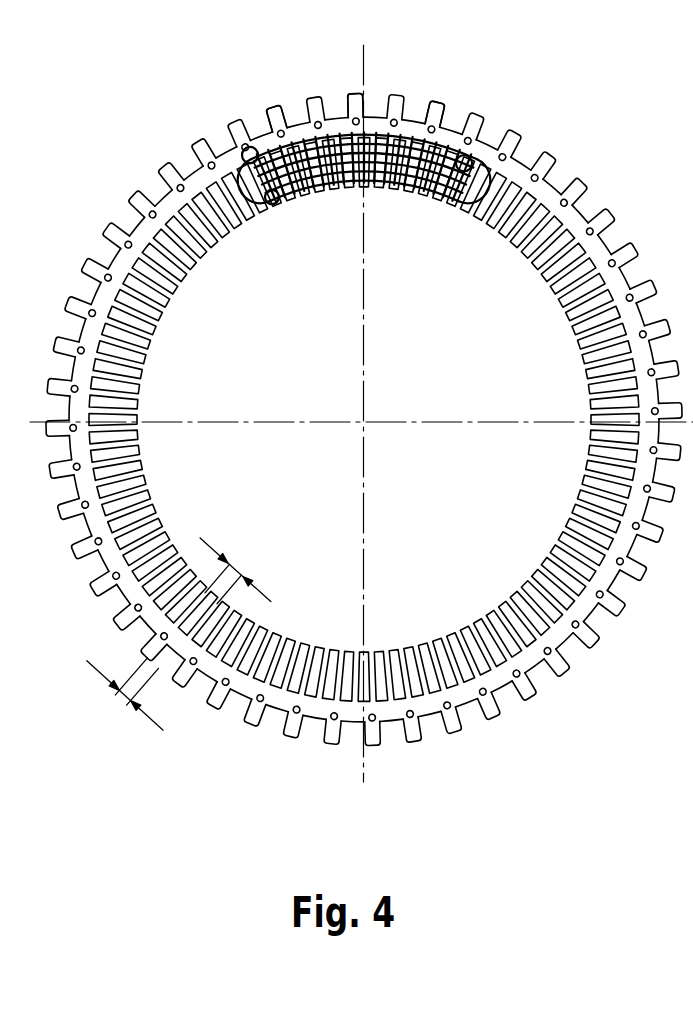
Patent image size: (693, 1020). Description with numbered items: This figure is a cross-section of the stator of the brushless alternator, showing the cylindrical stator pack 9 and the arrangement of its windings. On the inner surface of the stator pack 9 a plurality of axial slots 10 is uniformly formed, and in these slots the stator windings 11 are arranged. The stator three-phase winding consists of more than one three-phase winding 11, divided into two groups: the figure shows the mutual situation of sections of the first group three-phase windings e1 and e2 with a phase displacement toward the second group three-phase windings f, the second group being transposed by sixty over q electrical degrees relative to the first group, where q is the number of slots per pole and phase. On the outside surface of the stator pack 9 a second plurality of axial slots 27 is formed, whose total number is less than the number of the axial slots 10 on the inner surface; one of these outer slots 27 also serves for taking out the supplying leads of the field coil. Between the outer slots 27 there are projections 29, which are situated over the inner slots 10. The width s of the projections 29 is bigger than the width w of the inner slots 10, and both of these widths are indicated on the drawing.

The stator pack 9 is at (542, 190).
The axial slots 10 is at (550, 207).
The stator windings 11 is at (353, 96).
The slots 27 is at (266, 134).
The projections 29 is at (436, 101).
The first group three-phase windings e1 is at (244, 152).
The first group three-phase windings e2 is at (266, 205).
The second group three-phase windings f is at (459, 157).
The width of slots w is at (226, 582).
The width of projections s is at (137, 682).